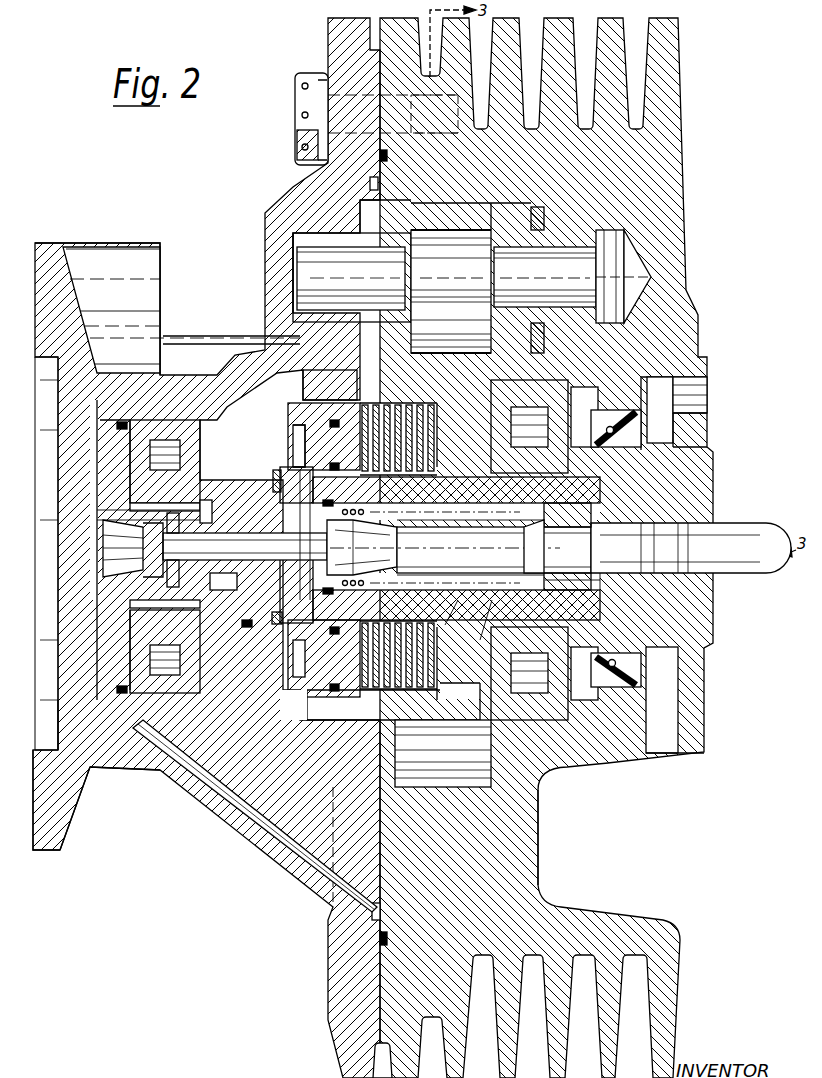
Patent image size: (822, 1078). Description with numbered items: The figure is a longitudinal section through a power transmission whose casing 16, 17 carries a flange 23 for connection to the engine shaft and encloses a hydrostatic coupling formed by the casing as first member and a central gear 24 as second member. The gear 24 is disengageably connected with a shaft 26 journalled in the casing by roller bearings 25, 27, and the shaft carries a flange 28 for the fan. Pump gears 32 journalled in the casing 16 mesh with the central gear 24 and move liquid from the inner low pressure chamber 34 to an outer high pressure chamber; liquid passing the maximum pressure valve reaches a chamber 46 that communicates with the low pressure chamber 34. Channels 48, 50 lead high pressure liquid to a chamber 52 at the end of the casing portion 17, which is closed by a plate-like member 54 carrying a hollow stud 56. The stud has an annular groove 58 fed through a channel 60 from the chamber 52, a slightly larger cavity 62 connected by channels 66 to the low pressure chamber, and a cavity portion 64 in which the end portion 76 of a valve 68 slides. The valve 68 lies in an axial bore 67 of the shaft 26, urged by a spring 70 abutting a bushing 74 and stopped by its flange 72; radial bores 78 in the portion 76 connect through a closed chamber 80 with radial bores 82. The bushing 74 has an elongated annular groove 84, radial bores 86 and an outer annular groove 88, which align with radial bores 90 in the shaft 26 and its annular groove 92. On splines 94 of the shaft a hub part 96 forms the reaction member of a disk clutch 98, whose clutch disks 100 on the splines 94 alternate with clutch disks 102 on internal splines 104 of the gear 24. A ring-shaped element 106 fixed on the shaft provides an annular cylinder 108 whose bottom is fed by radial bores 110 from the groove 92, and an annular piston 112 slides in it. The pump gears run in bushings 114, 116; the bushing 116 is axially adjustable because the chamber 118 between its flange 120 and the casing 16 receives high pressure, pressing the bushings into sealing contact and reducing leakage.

The casing 16 is at (672, 167).
The casing portion 17 is at (243, 350).
The flange 23 is at (70, 800).
The central gear 24 is at (410, 760).
The roller bearing 25 is at (170, 648).
The shaft 26 is at (652, 632).
The roller bearing 27 is at (550, 717).
The flange 28 is at (695, 676).
The gear 32 is at (393, 230).
The low pressure chamber 34 is at (300, 720).
The chamber 46 is at (653, 277).
The channel 48 is at (368, 180).
The channel 50 is at (260, 855).
The chamber 52 is at (93, 610).
The plate-like member 54 is at (105, 478).
The hollow stud 56 is at (200, 578).
The annular groove 58 is at (207, 469).
The channel 60 is at (180, 460).
The cavity 62 is at (115, 557).
The cavity portion 64 is at (100, 540).
The channel 66 is at (75, 625).
The axial bore 67 is at (524, 500).
The valve 68 is at (478, 548).
The spring 70 is at (548, 588).
The flange 72 is at (544, 517).
The bushing 74 is at (360, 502).
The end portion 76 is at (197, 522).
The radial bore 78 is at (105, 575).
The closed chamber 80 is at (247, 628).
The radial bore 82 is at (272, 628).
The annular groove 84 is at (262, 500).
The radial bore 86 is at (275, 612).
The annular groove 88 is at (370, 580).
The radial bore 90 is at (352, 506).
The annular groove 92 is at (365, 508).
The splines 94 is at (458, 600).
The hub part 96 is at (492, 600).
The disk clutch 98 is at (352, 400).
The clutch disks 100 is at (420, 600).
The clutch disks 102 is at (385, 727).
The internal splines 104 is at (350, 720).
The ring-shaped element 106 is at (290, 410).
The annular cylinder 108 is at (300, 427).
The radial bore 110 is at (277, 470).
The annular piston 112 is at (320, 668).
The bushing 114 is at (300, 245).
The bushing 116 is at (600, 245).
The chamber 118 is at (596, 303).
The flange 120 is at (539, 216).